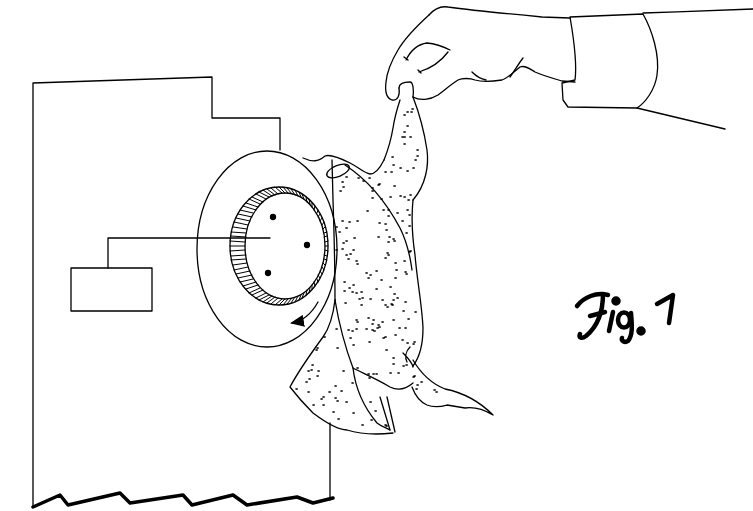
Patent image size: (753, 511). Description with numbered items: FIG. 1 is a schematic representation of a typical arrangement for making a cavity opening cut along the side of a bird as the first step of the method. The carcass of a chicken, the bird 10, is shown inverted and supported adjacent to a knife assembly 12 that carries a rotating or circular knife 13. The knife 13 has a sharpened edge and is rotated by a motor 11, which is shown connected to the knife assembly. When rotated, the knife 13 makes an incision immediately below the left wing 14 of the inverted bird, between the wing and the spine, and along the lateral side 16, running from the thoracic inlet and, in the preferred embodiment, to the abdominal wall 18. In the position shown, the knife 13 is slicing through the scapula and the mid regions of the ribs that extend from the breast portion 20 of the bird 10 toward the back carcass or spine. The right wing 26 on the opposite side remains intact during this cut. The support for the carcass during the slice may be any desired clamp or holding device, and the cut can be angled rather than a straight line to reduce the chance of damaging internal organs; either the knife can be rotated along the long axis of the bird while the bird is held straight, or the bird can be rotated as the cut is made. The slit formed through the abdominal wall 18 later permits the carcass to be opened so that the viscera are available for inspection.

The bird 10 is at (382, 285).
The motor 11 is at (90, 313).
The knife assembly 12 is at (318, 472).
The rotating or circular knife 13 is at (226, 302).
The left wing 14 is at (323, 399).
The lateral side 16 is at (337, 223).
The abdominal wall 18 is at (367, 197).
The breast portion 20 is at (383, 250).
The right wing 26 is at (437, 387).